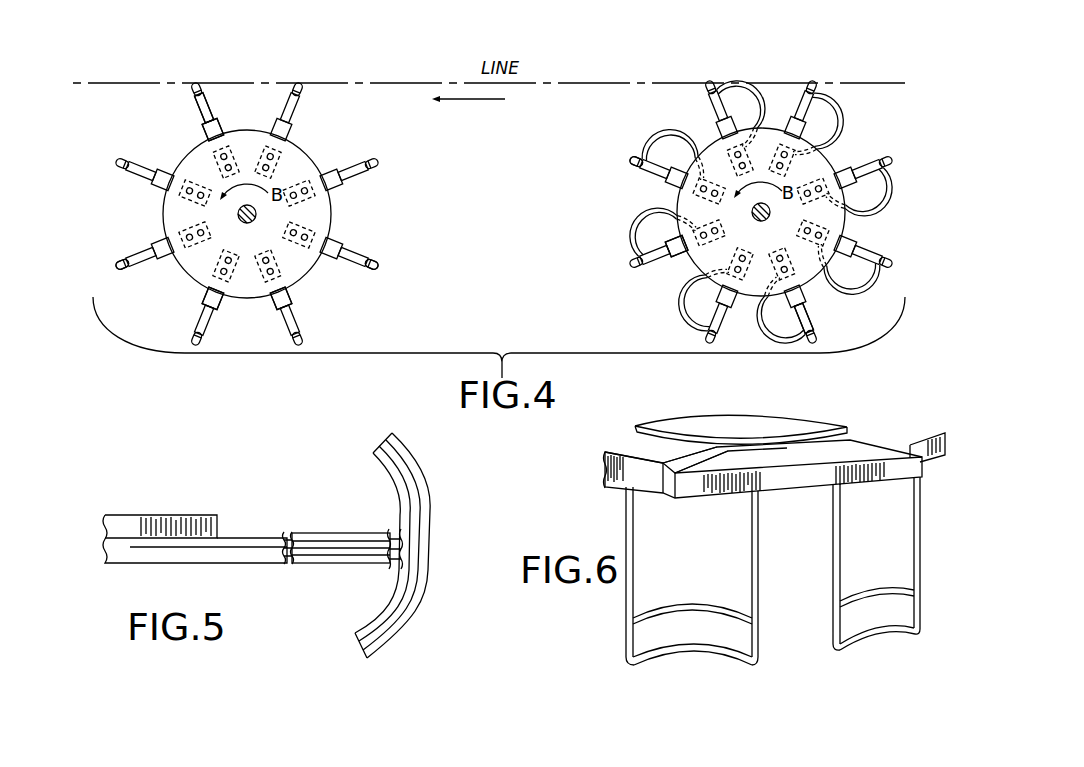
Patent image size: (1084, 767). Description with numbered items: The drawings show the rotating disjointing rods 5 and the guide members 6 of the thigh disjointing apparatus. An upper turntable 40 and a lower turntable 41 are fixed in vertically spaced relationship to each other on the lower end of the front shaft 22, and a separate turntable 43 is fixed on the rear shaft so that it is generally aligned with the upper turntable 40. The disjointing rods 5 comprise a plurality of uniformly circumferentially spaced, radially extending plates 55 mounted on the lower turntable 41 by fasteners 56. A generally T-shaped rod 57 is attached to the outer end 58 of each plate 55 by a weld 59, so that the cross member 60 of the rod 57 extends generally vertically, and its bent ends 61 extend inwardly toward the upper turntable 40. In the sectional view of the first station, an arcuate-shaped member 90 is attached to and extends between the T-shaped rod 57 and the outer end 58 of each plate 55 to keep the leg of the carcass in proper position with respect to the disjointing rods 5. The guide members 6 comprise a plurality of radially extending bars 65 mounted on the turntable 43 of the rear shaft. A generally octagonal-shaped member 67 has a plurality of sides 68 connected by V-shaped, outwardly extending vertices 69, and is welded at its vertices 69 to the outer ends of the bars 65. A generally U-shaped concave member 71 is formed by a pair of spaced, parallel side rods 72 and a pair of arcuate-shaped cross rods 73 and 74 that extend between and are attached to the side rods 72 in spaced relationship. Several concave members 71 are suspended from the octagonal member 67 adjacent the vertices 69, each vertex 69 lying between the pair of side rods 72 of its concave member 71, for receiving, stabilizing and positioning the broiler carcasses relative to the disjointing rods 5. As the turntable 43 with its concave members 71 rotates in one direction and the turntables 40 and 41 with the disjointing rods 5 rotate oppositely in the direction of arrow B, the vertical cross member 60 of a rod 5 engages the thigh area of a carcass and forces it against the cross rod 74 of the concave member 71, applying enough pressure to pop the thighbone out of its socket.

In FIG. 4, the disjointing rod 5 is at (362, 146).
In FIG. 5, the disjointing rod 5 is at (376, 536).
In FIG. 6, the guide member 6 is at (754, 537).
In FIG. 4, the front shaft 22 is at (243, 216).
In FIG. 5, the upper turntable 40 is at (133, 530).
In FIG. 4, the lower turntable 41 is at (818, 163).
In FIG. 6, the turntable 43 is at (790, 424).
In FIG. 4, the plate 55 is at (208, 127).
In FIG. 5, the plate 55 is at (237, 548).
In FIG. 4, the fastener 56 is at (277, 147).
In FIG. 4, the T-shaped rod 57 is at (207, 112).
In FIG. 5, the T-shaped rod 57 is at (330, 548).
In FIG. 5, the outer end 58 is at (265, 548).
In FIG. 5, the weld 59 is at (290, 566).
In FIG. 4, the cross member 60 is at (127, 267).
In FIG. 5, the cross member 60 is at (410, 525).
In FIG. 4, the bent end 61 is at (368, 263).
In FIG. 5, the bent end 61 is at (381, 440).
In FIG. 6, the bar 65 is at (709, 452).
In FIG. 6, the octagonal-shaped member 67 is at (622, 445).
In FIG. 6, the side 68 is at (617, 468).
In FIG. 6, the vertex 69 is at (905, 466).
In FIG. 6, the concave member 71 is at (769, 585).
In FIG. 6, the side rod 72 is at (636, 578).
In FIG. 6, the cross rod 73 is at (695, 657).
In FIG. 6, the cross rod 74 is at (720, 606).
In FIG. 4, the arcuate-shaped member 90 is at (657, 142).